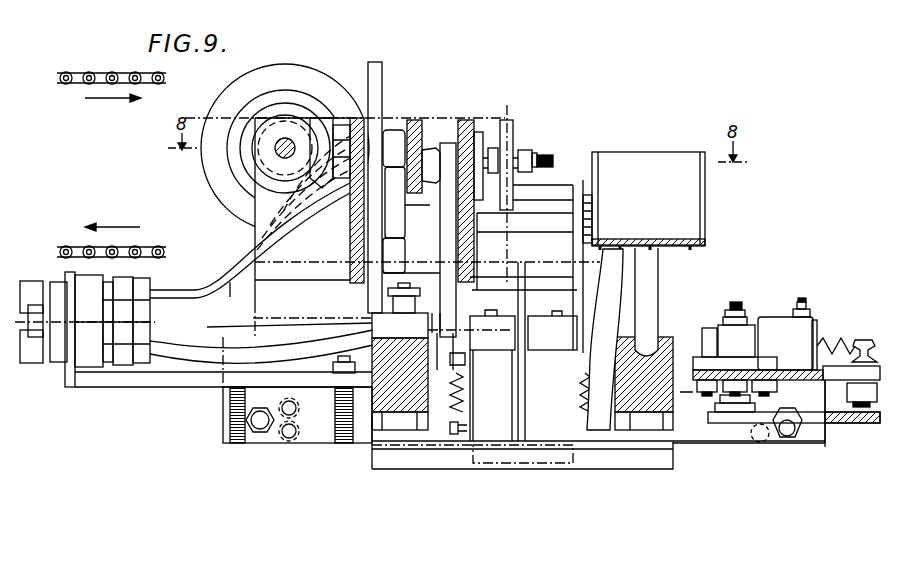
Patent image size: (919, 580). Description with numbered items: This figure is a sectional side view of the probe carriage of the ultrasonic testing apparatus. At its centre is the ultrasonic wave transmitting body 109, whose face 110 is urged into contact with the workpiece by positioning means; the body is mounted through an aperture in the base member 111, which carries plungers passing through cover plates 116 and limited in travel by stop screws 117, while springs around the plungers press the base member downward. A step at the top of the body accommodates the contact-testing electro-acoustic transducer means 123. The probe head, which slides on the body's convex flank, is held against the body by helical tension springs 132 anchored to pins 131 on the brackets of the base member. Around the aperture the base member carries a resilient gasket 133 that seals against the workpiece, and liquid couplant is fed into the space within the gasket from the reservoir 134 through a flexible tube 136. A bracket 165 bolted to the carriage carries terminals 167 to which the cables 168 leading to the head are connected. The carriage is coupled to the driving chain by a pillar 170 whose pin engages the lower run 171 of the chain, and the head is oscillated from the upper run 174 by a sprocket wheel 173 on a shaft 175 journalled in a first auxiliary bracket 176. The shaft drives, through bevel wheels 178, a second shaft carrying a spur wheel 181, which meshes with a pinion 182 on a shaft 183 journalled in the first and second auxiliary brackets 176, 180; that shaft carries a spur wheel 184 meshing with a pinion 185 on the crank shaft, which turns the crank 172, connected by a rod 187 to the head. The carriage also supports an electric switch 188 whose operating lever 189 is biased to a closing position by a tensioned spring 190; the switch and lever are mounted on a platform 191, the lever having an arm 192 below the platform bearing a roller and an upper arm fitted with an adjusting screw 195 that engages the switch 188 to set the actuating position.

The ultrasonic wave transmitting body 109 is at (555, 432).
The face 110 is at (538, 463).
The base member 111 is at (497, 443).
The cover plate 116 is at (383, 325).
The stop screw 117 is at (657, 298).
The contact-testing electro-acoustic transducer means 123 is at (547, 327).
The pin 131 is at (462, 433).
The helical tension spring 132 is at (465, 387).
The gasket 133 is at (637, 460).
The reservoir 134 is at (645, 178).
The flexible tube 136 is at (607, 288).
The bracket 165 is at (122, 380).
The terminals 167 is at (135, 337).
The cables 168 is at (198, 348).
The pillar 170 is at (392, 282).
The lower run of the driving chain 171 is at (165, 238).
The crank 172 is at (507, 128).
The sprocket wheel 173 is at (292, 82).
The upper run of the driving chain 174 is at (104, 80).
The shaft 175 is at (277, 150).
The first auxiliary bracket 176 is at (276, 192).
The bevel wheels 178 is at (300, 125).
The second auxiliary bracket 180 is at (403, 125).
The spur wheel 181 is at (377, 100).
The pinion 182 is at (352, 250).
The shaft 183 is at (385, 274).
The spur wheel 184 is at (447, 298).
The pinion 185 is at (448, 140).
The rod 187 is at (522, 185).
The electric switch 188 is at (790, 332).
The operating lever 189 is at (835, 417).
The tensioned spring 190 is at (823, 346).
The platform 191 is at (862, 373).
The arm 192 is at (803, 417).
The adjusting screw 195 is at (703, 342).